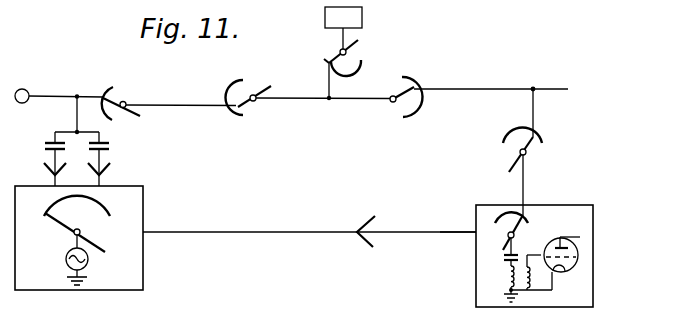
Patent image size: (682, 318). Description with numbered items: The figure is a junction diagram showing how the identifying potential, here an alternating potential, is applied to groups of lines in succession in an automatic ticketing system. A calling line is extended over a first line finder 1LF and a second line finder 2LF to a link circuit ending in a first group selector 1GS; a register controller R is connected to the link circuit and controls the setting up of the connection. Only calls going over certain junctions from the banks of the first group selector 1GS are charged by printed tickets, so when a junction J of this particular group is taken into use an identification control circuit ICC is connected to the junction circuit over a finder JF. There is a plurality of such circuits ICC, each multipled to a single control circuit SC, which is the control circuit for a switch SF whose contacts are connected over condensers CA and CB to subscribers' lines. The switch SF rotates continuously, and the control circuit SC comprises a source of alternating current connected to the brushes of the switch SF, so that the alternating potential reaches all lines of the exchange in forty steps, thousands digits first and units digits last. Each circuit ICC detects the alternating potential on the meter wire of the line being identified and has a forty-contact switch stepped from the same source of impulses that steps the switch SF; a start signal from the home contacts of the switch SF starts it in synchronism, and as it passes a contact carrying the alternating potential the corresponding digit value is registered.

The first line finder 1LF is at (121, 94).
The second line finder 2LF is at (249, 89).
The first group selector 1GS is at (410, 90).
The register controller R is at (343, 41).
The junction J is at (544, 104).
The finder JF is at (531, 149).
The condenser CA is at (57, 158).
The condenser CB is at (109, 159).
The switch SF is at (77, 224).
The control circuit SC is at (79, 238).
The identification control circuit ICC is at (583, 260).